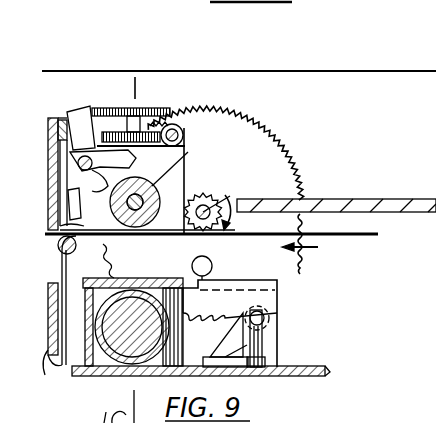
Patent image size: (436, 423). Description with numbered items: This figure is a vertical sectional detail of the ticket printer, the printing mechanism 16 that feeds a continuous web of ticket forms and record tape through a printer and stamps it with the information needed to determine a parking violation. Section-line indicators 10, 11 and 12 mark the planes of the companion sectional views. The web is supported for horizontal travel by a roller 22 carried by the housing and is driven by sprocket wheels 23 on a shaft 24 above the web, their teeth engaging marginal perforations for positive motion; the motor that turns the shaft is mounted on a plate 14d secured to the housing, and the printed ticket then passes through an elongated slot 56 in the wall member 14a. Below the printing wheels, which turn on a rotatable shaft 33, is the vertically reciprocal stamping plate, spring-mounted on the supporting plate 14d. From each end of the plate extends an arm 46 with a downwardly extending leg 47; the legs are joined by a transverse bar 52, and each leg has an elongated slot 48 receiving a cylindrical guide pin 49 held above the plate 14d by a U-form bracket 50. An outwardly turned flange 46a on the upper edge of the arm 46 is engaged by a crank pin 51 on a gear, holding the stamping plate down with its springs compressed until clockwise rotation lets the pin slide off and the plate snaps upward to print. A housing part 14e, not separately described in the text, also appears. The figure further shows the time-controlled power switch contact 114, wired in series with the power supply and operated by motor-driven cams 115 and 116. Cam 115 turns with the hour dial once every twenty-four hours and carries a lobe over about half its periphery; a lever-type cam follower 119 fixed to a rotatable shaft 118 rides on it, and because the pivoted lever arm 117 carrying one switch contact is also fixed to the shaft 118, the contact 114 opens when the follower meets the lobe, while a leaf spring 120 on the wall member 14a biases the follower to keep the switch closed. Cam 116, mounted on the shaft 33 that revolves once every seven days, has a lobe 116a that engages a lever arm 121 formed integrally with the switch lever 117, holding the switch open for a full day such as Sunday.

The apparatus 10 is at (150, 82).
The section line 11- 11 is at (435, 15).
The section line 12- 12 is at (37, 198).
The wall member 14a is at (50, 345).
The supporting plate 14d is at (305, 372).
The frame top plate 14e is at (330, 200).
The printing mechanism 16 is at (108, 378).
The roller 22 is at (113, 262).
The sprocket wheels 23 is at (214, 196).
The shaft 24 is at (222, 200).
The rotatable shaft 33 is at (184, 160).
The arm 46 is at (258, 295).
The outwardly turned flange 46a is at (300, 268).
The leg 47 is at (263, 338).
The elongated slot 48 is at (265, 350).
The guide pin 49 is at (270, 315).
The bracket of U-form 50 is at (212, 368).
The crank pin 51 is at (213, 266).
The transversely extending bar 52 is at (299, 374).
The elongated slot 56 is at (85, 245).
The time-controlled power switch contact 114 is at (82, 208).
The cam 115 is at (92, 115).
The cam 116 is at (184, 152).
The lobe 116a is at (184, 181).
The pivoted lever arm 117 is at (72, 192).
The rotatable shaft 118 is at (131, 160).
The cam follower 119 is at (75, 118).
The leaf spring 120 is at (62, 120).
The lever arm 121 is at (107, 148).